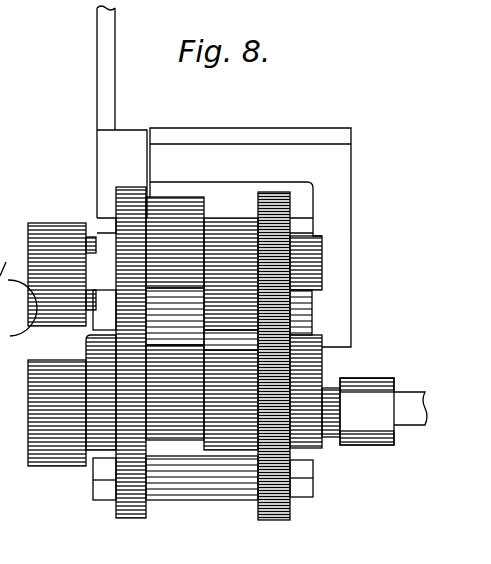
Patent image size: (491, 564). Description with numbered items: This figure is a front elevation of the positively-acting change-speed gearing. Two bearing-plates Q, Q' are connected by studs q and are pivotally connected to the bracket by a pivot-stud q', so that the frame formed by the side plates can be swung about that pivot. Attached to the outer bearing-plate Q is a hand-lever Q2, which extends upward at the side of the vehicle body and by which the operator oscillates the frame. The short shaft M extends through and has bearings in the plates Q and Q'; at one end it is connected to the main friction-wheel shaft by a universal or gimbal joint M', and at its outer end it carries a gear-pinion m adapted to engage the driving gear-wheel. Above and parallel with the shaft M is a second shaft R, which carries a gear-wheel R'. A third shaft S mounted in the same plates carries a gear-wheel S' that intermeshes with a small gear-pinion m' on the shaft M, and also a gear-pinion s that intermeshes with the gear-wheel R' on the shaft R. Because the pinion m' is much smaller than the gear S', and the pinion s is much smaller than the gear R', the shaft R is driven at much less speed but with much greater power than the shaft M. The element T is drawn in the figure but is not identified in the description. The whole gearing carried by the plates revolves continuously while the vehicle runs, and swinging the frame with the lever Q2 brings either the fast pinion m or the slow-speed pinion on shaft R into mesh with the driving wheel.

The hand-lever Q2 is at (115, 50).
The gear T is at (54, 242).
The gear-pinion m is at (57, 430).
The bearing-plate Q is at (131, 368).
The gear-wheel R' is at (186, 242).
The pivot-stud q' is at (175, 316).
The gear-pinion s is at (175, 392).
The second shaft R is at (231, 274).
The gear-wheel S' is at (231, 400).
The stud q is at (147, 341).
The bearing-plate Q' is at (297, 393).
The gear-pinion m' is at (202, 489).
The short shaft M is at (277, 403).
The universal or gimbal joint M' is at (409, 392).